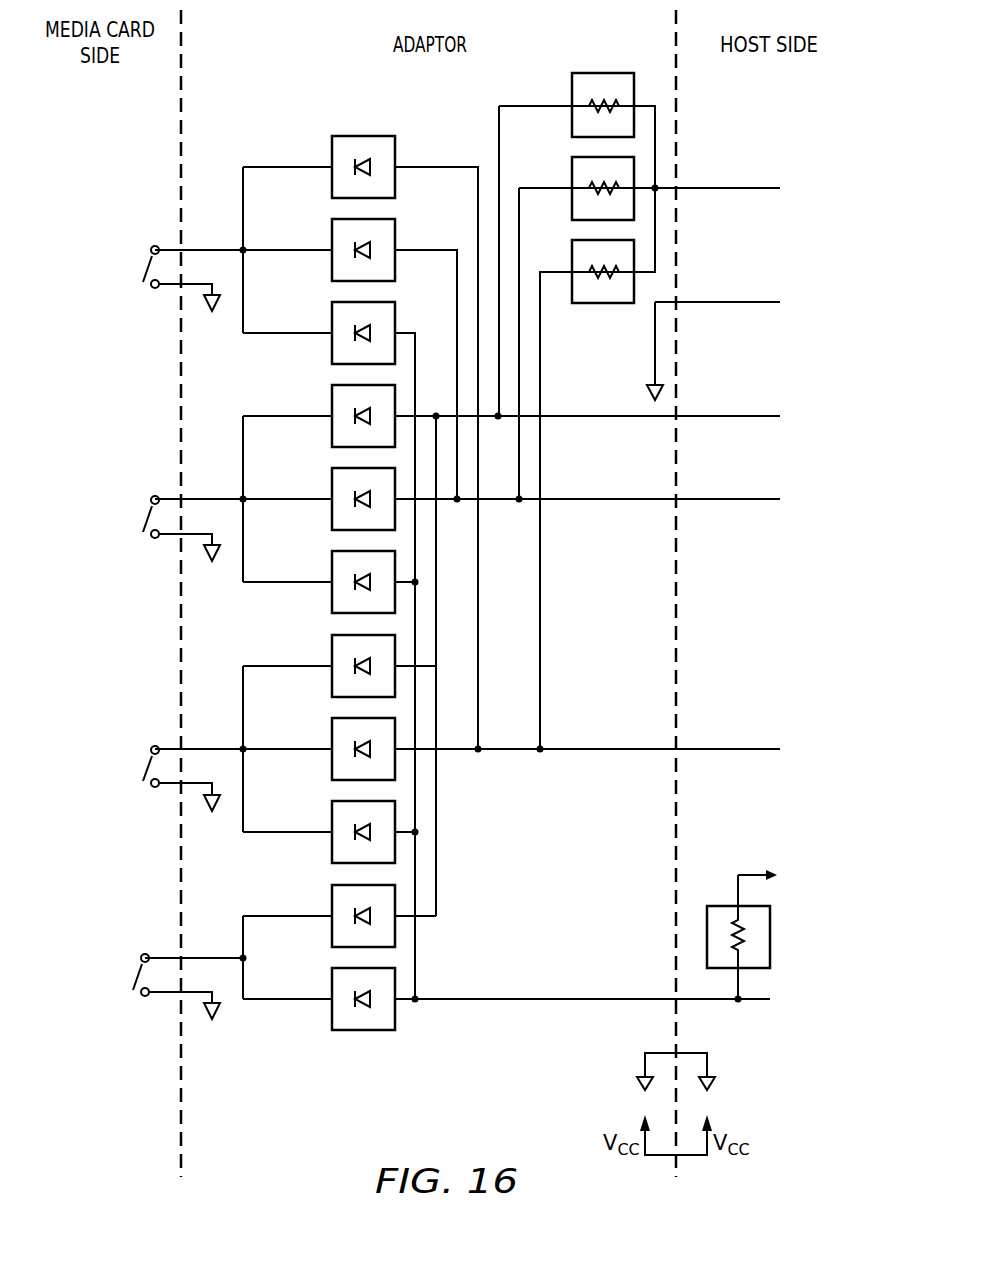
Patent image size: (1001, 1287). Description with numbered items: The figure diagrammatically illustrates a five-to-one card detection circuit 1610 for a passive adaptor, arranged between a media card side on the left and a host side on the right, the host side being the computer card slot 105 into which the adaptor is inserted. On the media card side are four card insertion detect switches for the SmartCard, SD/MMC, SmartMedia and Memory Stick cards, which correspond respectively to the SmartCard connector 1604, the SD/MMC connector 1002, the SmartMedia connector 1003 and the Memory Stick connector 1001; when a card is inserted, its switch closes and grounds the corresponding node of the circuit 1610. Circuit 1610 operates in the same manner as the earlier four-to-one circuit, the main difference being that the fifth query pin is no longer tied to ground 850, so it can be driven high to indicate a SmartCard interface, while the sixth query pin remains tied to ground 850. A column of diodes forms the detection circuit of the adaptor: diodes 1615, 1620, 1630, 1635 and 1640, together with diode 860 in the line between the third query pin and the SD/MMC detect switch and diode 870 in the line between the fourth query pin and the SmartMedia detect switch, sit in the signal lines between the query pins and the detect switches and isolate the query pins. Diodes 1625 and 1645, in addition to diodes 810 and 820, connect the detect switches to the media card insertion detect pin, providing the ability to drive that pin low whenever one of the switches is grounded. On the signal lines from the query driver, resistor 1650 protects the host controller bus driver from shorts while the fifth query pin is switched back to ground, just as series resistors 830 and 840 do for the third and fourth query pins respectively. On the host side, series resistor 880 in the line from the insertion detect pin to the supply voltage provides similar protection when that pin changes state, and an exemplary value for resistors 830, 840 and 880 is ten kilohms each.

The 5-to-1 card detection circuit 1610 is at (285, 76).
The diode 1615 is at (332, 160).
The diode 1620 is at (332, 263).
The diode 1625 is at (332, 345).
The diode 1630 is at (332, 408).
The diode 1635 is at (332, 658).
The diode 1640 is at (332, 907).
The diode 1645 is at (332, 1014).
The resistor 1650 is at (602, 73).
The series resistor 830 is at (572, 175).
The series resistor 840 is at (603, 303).
The ground 850 is at (646, 392).
The diode 860 is at (332, 512).
The diode 810 is at (332, 594).
The diode 870 is at (332, 762).
The diode 820 is at (332, 844).
The series resistor 880 is at (772, 934).
The card slot 105 is at (674, 877).
The media card connector 1604 is at (147, 238).
The media card connector 1002 is at (147, 488).
The media card connector 1003 is at (148, 798).
The media card connector 1001 is at (135, 1005).